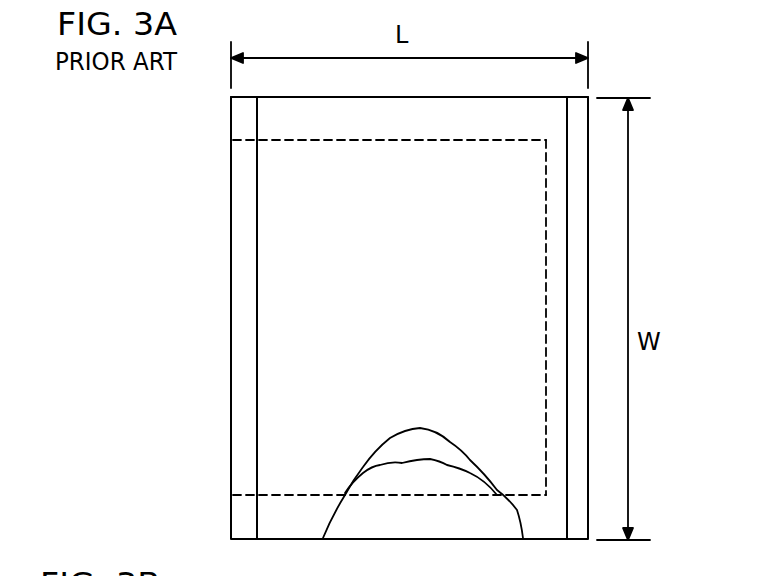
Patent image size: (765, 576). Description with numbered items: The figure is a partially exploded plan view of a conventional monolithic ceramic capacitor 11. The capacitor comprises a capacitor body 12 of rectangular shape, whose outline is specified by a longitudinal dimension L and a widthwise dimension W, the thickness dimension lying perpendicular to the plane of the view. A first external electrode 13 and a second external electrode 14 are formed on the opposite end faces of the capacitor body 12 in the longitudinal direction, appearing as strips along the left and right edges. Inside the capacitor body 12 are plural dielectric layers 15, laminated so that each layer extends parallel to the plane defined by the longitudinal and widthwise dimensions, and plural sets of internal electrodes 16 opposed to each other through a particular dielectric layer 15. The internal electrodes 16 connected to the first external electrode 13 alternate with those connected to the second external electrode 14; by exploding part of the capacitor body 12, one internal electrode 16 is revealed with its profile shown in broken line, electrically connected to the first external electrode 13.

The monolithic ceramic capacitor 11 is at (205, 143).
The capacitor body 12 is at (480, 97).
The first external electrode 13 is at (242, 348).
The second external electrode 14 is at (582, 224).
The dielectric layers 15 is at (377, 462).
The internal electrodes 16 is at (445, 492).